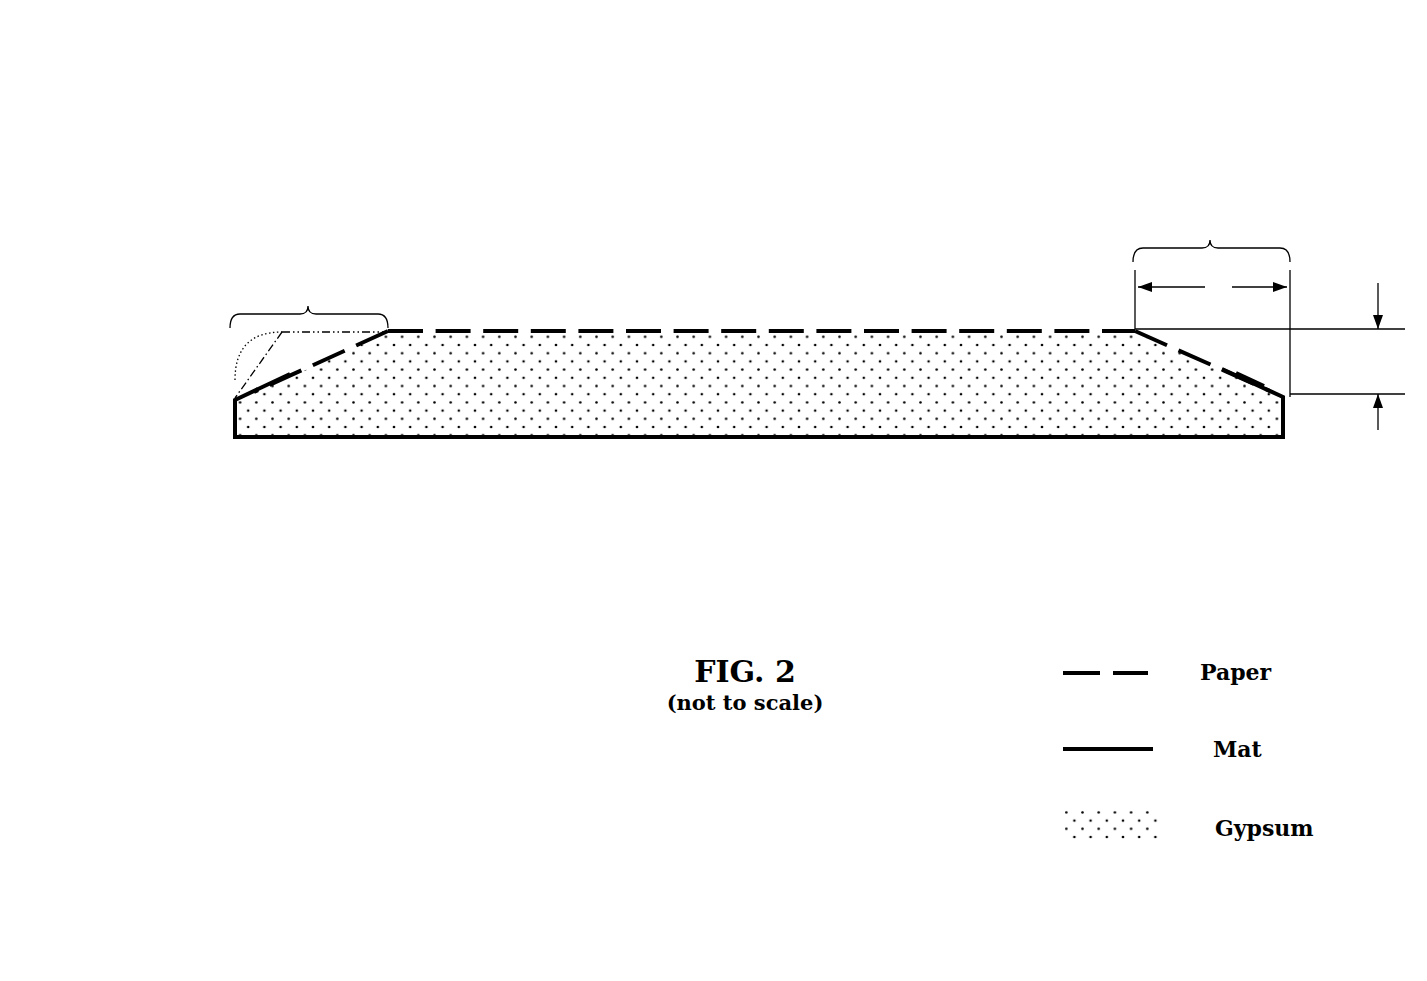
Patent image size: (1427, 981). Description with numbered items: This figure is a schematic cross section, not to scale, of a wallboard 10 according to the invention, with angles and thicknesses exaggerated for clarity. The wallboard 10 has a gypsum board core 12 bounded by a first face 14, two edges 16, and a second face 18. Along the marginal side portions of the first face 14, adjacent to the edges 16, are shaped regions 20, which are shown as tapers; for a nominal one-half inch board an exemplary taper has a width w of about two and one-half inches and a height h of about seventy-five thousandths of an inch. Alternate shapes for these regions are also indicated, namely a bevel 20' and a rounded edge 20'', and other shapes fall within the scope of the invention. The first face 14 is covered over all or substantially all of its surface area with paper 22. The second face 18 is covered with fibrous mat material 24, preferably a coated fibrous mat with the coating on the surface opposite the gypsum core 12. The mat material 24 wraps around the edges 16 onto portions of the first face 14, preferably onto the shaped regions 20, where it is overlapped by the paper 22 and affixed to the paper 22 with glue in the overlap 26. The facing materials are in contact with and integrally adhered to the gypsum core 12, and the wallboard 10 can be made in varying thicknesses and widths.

The wallboard 10 is at (829, 105).
The gypsum board core 12 is at (745, 400).
The first face 14 is at (591, 312).
The edges 16 is at (232, 419).
The second face 18 is at (463, 450).
The shaped regions 20 is at (817, 265).
The bevel 20' is at (322, 417).
The rounded edge 20'' is at (248, 363).
The paper 22 is at (883, 328).
The fibrous mat material 24 is at (937, 445).
The overlap 26 is at (275, 394).